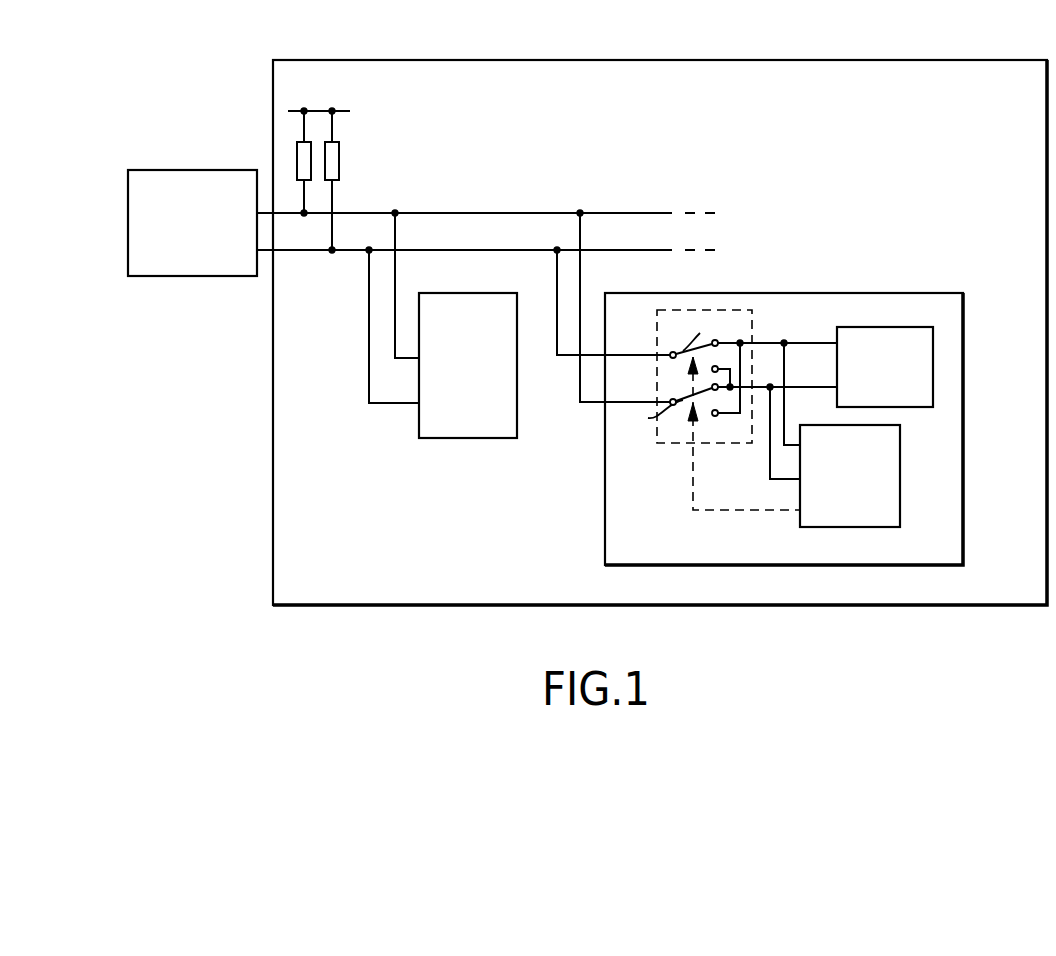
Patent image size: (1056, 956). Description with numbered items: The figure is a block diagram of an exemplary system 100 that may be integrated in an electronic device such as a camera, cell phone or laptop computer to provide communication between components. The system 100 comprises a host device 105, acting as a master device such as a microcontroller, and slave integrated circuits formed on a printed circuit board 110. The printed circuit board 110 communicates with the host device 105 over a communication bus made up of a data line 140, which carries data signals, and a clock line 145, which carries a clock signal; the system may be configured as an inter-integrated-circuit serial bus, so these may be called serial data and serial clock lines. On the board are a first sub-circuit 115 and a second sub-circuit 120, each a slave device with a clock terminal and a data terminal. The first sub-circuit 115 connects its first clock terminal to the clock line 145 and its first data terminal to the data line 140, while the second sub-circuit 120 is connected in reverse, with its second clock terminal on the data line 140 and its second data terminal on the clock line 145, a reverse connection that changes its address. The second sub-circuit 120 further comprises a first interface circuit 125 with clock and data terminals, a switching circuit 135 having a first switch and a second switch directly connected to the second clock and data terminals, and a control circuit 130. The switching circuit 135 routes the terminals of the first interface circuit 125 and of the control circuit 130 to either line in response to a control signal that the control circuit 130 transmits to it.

The system 100 is at (146, 87).
The host device 105 is at (153, 278).
The printed circuit board 110 is at (272, 525).
The first sub-circuit 115 is at (461, 440).
The second sub-circuit 120 is at (880, 292).
The first interface circuit 125 is at (933, 355).
The control circuit 130 is at (900, 465).
The switching circuit 135 is at (665, 447).
The data line 140 is at (518, 250).
The clock line 145 is at (547, 212).